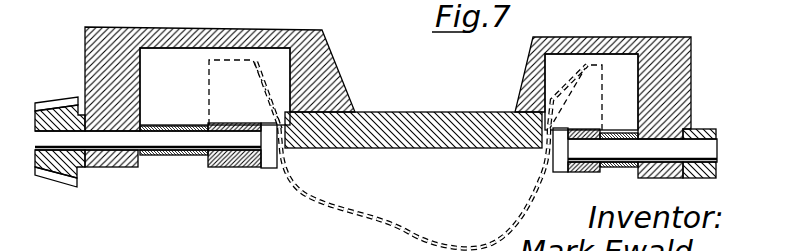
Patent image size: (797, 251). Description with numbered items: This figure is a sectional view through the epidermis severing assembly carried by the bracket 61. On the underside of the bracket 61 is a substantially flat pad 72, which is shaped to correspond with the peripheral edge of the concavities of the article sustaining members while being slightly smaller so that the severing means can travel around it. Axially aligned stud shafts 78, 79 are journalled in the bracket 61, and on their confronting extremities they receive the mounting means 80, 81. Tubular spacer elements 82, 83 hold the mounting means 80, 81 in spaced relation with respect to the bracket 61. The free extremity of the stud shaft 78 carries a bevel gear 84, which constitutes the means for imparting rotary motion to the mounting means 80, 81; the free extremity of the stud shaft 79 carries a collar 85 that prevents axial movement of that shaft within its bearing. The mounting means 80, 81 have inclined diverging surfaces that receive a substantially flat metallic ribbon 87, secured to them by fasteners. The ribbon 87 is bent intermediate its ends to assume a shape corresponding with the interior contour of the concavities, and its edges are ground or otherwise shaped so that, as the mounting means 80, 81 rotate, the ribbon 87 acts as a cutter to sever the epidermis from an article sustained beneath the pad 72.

The bracket 61 is at (282, 28).
The flat pad 72 is at (415, 124).
The stud shaft 78 is at (163, 140).
The stud shaft 79 is at (690, 117).
The mounting means 80 is at (213, 118).
The mounting means 81 is at (596, 128).
The tubular spacer element 82 is at (177, 125).
The tubular spacer element 83 is at (618, 137).
The bevel gear 84 is at (52, 110).
The collar 85 is at (717, 129).
The metallic ribbon 87 is at (285, 148).